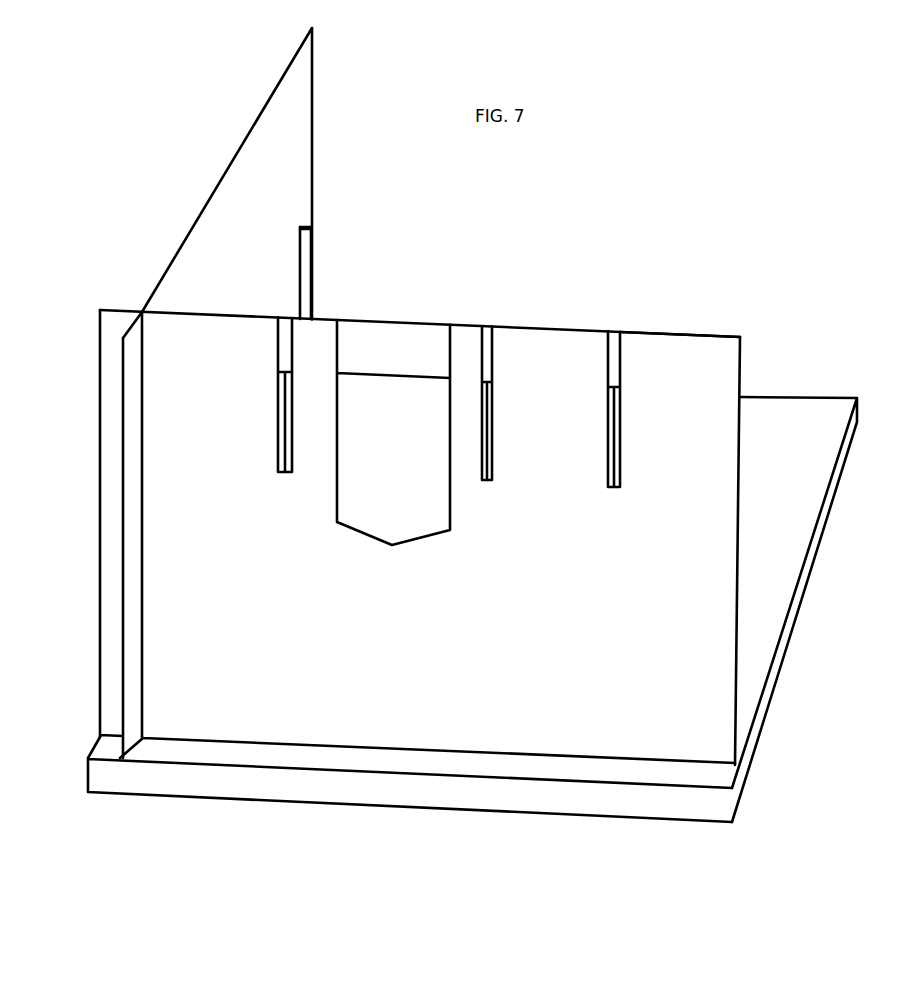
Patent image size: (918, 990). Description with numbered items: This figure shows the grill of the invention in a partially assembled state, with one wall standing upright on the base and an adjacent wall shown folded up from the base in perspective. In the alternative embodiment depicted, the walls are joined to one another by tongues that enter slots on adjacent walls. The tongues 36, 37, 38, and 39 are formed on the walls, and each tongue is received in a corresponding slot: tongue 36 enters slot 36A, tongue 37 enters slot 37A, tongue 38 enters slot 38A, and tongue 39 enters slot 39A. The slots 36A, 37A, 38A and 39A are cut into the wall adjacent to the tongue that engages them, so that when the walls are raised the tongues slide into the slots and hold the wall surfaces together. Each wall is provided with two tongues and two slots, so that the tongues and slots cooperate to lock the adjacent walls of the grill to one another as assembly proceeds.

The tongue 36 is at (305, 283).
The slot 36A is at (305, 232).
The tongue 37 is at (122, 709).
The slot 37A is at (143, 705).
The tongue 38 is at (100, 310).
The slot 38A is at (142, 313).
The tongue 39 is at (717, 336).
The slot 39A is at (615, 333).